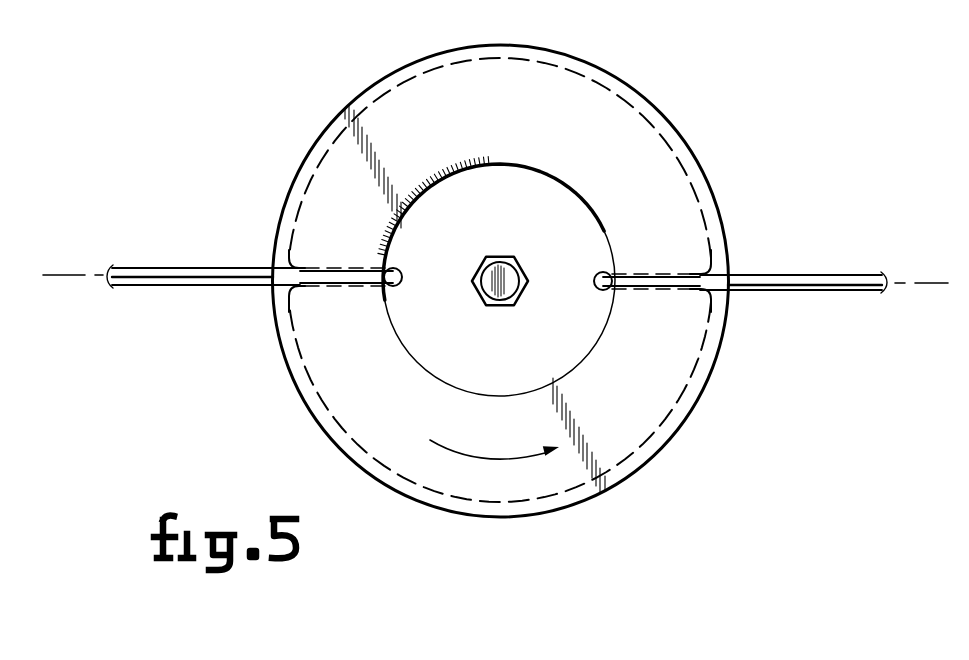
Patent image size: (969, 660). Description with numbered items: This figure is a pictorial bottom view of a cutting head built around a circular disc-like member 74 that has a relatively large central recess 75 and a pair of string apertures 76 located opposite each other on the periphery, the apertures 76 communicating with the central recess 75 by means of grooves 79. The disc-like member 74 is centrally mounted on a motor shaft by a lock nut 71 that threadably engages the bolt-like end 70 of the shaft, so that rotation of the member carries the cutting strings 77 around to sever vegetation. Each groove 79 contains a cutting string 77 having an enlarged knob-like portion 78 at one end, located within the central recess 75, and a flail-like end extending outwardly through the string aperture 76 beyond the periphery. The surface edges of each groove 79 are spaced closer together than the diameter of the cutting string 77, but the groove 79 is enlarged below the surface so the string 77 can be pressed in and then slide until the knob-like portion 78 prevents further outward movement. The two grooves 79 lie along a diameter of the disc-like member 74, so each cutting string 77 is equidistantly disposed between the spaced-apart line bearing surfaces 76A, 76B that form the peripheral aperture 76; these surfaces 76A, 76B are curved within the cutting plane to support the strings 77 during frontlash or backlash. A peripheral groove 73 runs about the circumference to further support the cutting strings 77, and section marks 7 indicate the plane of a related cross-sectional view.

The section line 7- 7 is at (55, 274).
The bolt-like end 70 is at (503, 264).
The lock nut 71 is at (496, 263).
The peripheral groove 73 is at (537, 62).
The disc-like member 74 is at (622, 82).
The central recess 75 is at (512, 163).
The string aperture 76 is at (256, 294).
The line bearing surface 76A is at (262, 298).
The line bearing surface 76B is at (262, 268).
The cutting string 77 is at (168, 267).
The knob-like portion 78 is at (399, 274).
The groove 79 is at (345, 270).